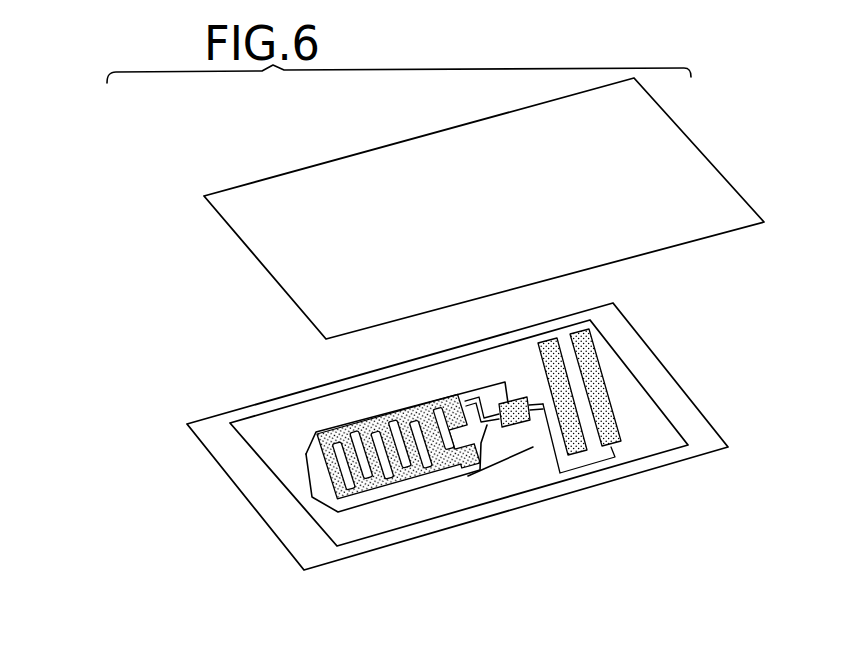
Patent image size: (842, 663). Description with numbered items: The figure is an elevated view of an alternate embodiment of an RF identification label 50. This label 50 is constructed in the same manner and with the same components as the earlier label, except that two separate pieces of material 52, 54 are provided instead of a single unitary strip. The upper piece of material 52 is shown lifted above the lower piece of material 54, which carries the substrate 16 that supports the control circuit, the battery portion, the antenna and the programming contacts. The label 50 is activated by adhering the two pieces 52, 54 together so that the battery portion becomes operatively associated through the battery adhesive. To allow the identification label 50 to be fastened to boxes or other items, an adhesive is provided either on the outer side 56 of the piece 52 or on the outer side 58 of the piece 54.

The substrate 16 is at (562, 477).
The RF identification label 50 is at (226, 349).
The piece of material 52 is at (735, 187).
The piece of material 54 is at (692, 395).
The outer side of portion 52 56 is at (391, 163).
The outer side of portion 54 58 is at (444, 531).